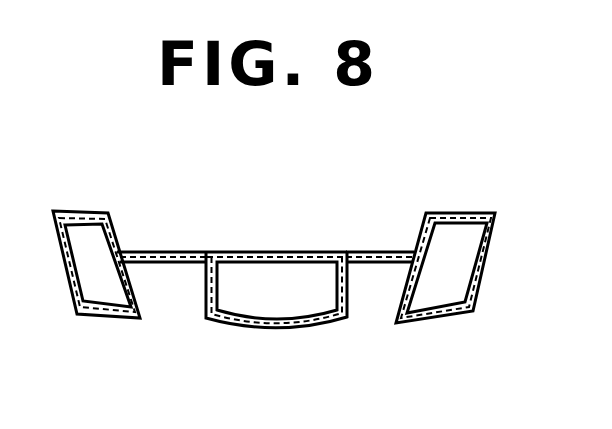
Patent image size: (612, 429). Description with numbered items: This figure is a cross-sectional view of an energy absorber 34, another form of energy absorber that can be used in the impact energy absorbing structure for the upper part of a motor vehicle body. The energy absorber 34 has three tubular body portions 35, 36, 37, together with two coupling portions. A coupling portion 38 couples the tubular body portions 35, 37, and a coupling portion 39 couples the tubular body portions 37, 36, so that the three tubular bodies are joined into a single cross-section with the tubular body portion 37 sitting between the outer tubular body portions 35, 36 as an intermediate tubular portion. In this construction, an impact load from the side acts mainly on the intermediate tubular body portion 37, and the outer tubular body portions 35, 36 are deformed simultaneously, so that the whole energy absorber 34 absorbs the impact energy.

The energy absorber 34 is at (411, 216).
The tubular body portion 35 is at (87, 316).
The tubular body portion 36 is at (450, 316).
The tubular body portion 37 is at (288, 329).
The coupling portion 38 is at (183, 251).
The coupling portion 39 is at (373, 251).